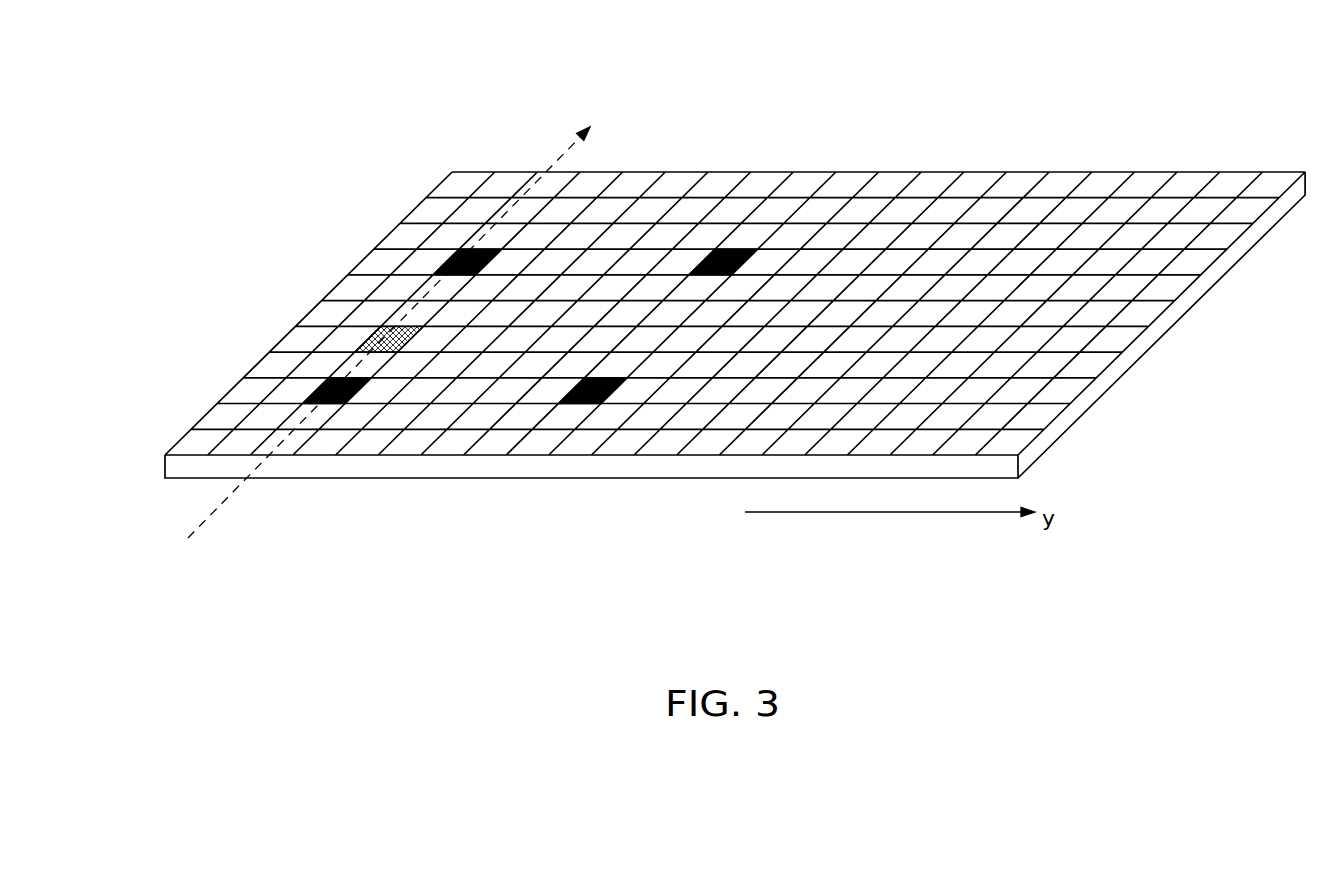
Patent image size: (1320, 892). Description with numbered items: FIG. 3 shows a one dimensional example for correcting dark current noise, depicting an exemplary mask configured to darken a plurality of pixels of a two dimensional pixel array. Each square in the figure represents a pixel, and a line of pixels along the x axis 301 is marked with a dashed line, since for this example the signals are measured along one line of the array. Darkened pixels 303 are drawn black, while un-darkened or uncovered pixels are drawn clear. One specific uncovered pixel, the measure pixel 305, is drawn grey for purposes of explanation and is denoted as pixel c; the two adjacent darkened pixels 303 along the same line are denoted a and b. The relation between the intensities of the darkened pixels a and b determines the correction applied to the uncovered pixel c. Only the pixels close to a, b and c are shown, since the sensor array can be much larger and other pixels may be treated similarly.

The x axis 301 is at (613, 110).
The darkened pixels 303 is at (430, 232).
The measure pixel 305 is at (357, 310).